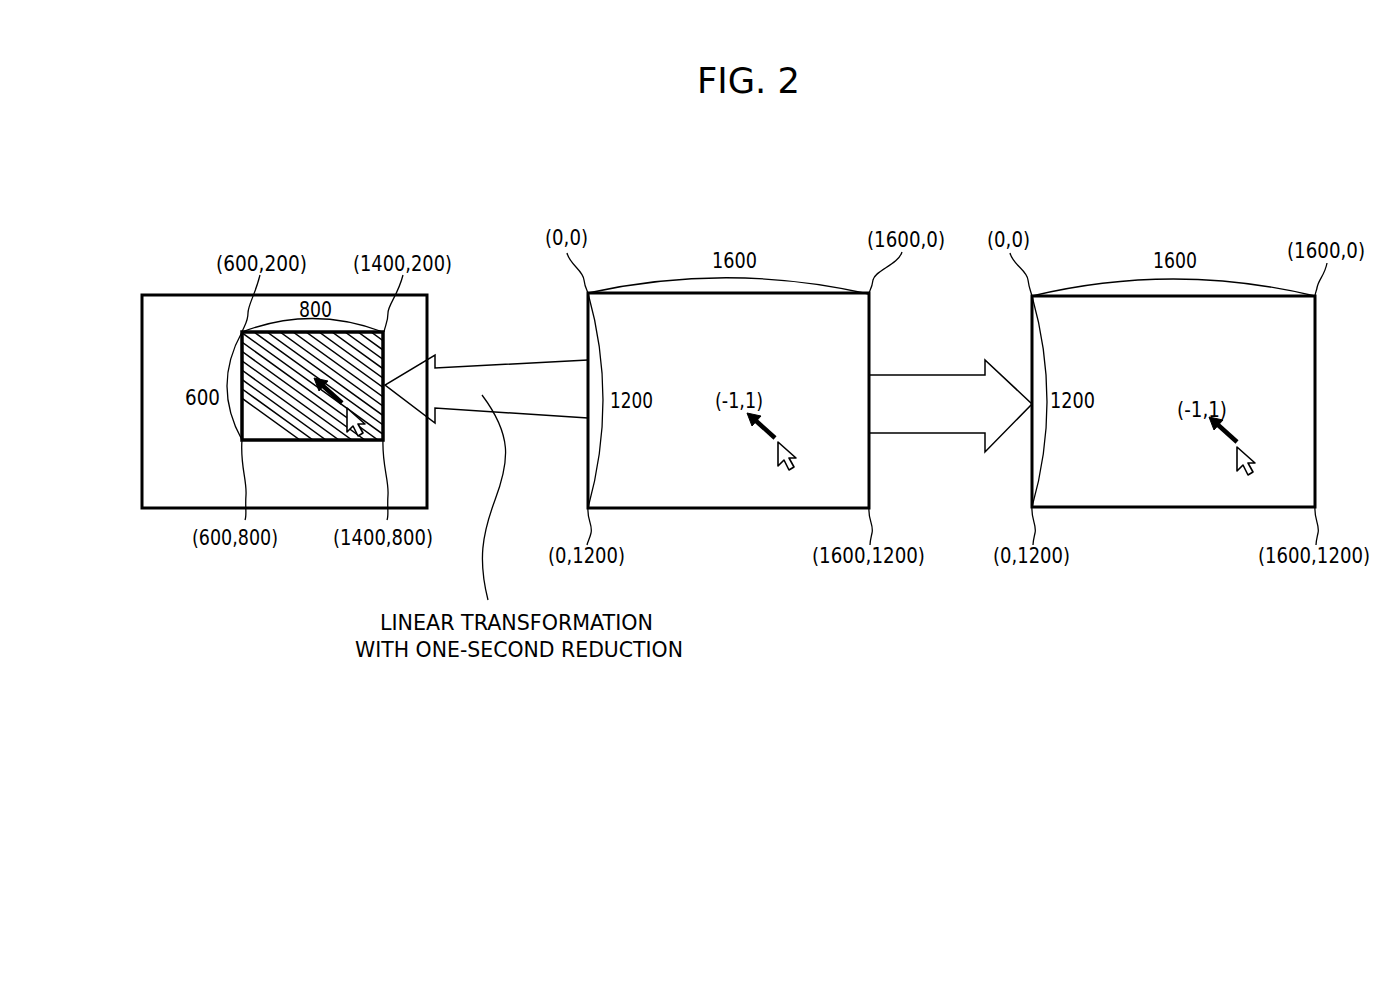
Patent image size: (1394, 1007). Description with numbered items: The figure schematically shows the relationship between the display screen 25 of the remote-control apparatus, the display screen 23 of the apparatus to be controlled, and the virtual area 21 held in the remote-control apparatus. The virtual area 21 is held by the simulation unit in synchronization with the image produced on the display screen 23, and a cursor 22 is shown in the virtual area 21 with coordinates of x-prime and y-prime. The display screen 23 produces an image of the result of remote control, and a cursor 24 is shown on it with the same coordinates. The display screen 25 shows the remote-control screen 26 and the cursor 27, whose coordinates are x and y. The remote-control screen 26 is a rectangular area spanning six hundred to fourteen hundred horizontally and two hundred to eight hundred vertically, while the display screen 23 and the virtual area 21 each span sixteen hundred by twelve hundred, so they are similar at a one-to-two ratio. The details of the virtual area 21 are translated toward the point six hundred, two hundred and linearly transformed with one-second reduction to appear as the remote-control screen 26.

The virtual area 21 is at (588, 338).
The cursor 22 is at (785, 470).
The display screen 23 is at (1032, 335).
The cursor 24 is at (1240, 465).
The display screen 25 is at (188, 295).
The remote-control screen 26 is at (240, 360).
The cursor 27 is at (357, 432).